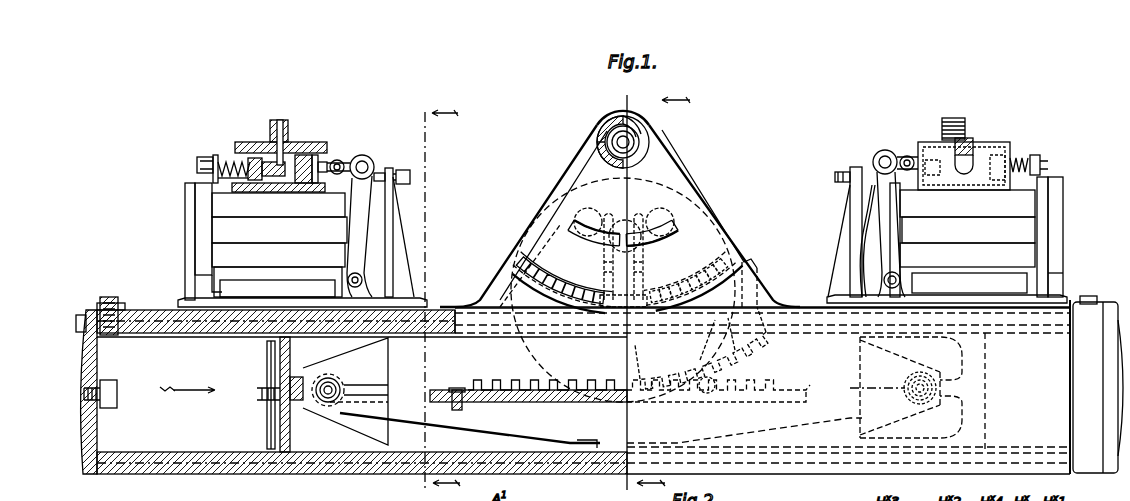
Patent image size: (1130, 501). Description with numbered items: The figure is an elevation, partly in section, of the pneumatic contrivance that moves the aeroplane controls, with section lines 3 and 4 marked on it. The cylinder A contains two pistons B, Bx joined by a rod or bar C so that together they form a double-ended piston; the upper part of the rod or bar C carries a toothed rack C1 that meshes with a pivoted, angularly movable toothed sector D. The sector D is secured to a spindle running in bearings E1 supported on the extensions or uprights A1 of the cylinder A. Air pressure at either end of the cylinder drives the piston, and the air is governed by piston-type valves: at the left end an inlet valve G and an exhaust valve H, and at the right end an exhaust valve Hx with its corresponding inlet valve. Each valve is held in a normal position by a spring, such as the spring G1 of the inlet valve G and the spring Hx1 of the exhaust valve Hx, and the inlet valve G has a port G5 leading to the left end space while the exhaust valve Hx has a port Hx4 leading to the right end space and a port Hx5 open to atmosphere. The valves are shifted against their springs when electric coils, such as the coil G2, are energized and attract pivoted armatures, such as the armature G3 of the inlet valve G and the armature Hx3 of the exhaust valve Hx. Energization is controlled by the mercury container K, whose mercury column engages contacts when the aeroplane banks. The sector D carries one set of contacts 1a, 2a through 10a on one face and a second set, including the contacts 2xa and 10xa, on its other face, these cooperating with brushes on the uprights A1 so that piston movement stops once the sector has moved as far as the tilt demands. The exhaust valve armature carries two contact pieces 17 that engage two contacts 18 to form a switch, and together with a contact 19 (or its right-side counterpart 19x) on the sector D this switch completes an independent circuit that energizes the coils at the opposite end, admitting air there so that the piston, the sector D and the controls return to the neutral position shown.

The cylinder A is at (153, 308).
The extensions or uprights A1 is at (586, 146).
The piston B is at (300, 424).
The piston Bx is at (972, 374).
The rod or bar C is at (585, 427).
The toothed rack C1 is at (485, 386).
The toothed sector D is at (758, 282).
The bearings E1 is at (634, 142).
The inlet valve G is at (317, 144).
The spring G1 is at (234, 178).
The electric coil G2 is at (235, 232).
The pivoted armature G3 is at (360, 222).
The port G5 is at (289, 128).
The exhaust valve H is at (500, 306).
The exhaust valve Hx is at (998, 145).
The spring Hx1 is at (1027, 155).
The pivoted armature Hx3 is at (885, 187).
The port Hx4 is at (972, 139).
The port Hx5 is at (950, 137).
The mercury container K is at (715, 212).
The contact pieces 17 is at (867, 210).
The contacts 18 is at (900, 208).
The contact 19 is at (590, 228).
The contact 19x is at (661, 224).
The contact 1a is at (627, 280).
The contact 2a is at (610, 300).
The contact 2xa is at (638, 282).
The contact 10a is at (553, 302).
The contact 10xa is at (681, 270).
The section line 3 is at (651, 288).
The section line 4 is at (433, 297).